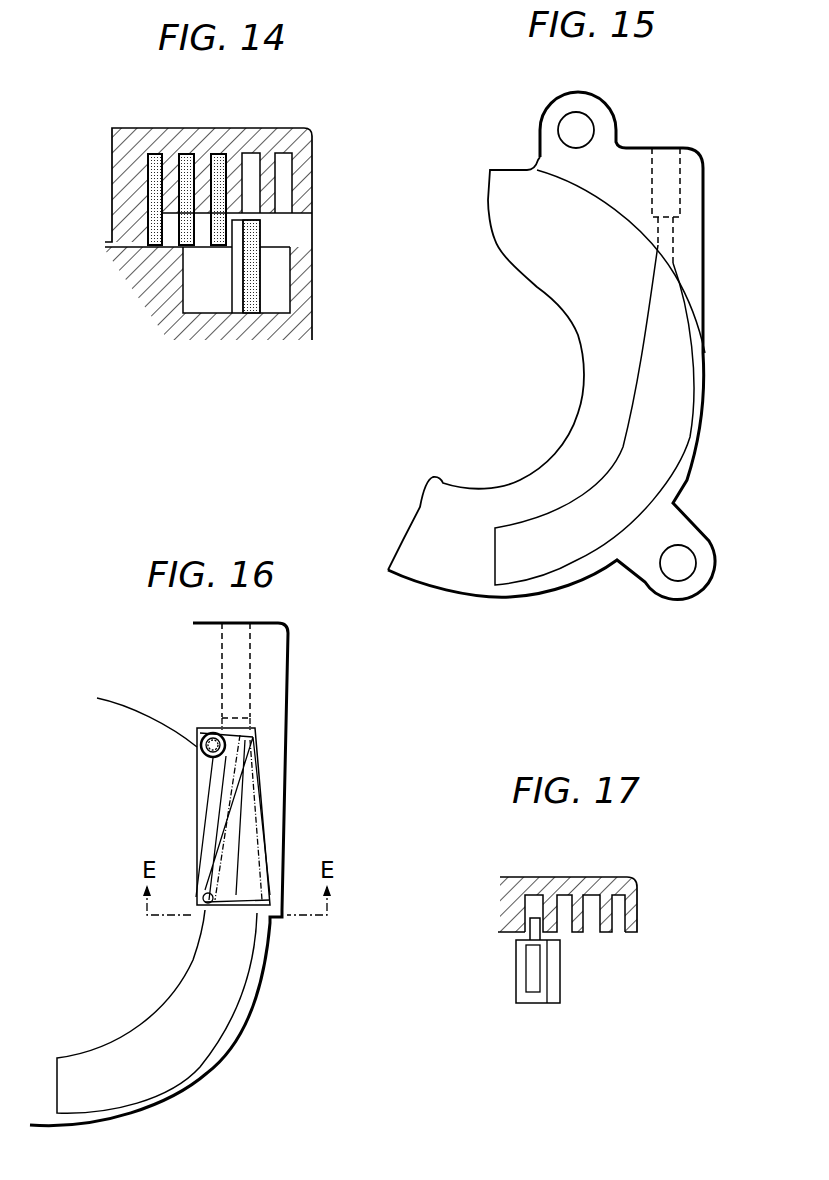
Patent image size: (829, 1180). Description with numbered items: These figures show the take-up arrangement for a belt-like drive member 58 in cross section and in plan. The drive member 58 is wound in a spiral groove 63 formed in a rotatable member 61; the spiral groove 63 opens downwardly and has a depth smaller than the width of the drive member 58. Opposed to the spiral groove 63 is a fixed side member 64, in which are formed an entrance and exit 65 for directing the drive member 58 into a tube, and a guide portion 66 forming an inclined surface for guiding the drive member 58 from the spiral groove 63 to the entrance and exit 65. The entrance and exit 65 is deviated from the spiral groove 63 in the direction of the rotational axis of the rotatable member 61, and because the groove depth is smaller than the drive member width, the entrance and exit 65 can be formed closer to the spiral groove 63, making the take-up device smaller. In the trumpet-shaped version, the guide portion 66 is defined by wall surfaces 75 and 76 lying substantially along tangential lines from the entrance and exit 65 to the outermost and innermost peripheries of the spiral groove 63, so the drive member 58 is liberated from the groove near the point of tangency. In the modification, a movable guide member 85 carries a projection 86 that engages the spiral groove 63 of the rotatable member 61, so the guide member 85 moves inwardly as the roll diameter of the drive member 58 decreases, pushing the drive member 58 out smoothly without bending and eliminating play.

In FIG. 14, the belt-like drive member 58 is at (187, 160).
In FIG. 14, the rotatable member 61 is at (127, 130).
In FIG. 17, the rotatable member 61 is at (592, 885).
In FIG. 14, the spiral groove 63 is at (283, 160).
In FIG. 17, the spiral groove 63 is at (617, 910).
In FIG. 14, the fixed side member 64 is at (175, 313).
In FIG. 15, the fixed side member 64 is at (442, 578).
In FIG. 16, the fixed side member 64 is at (270, 845).
In FIG. 14, the entrance and exit 65 is at (237, 307).
In FIG. 15, the entrance and exit 65 is at (680, 232).
In FIG. 16, the entrance and exit 65 is at (218, 718).
In FIG. 14, the guide portion 66 is at (274, 313).
In FIG. 15, the guide portion 66 is at (640, 417).
In FIG. 16, the guide portion 66 is at (223, 992).
In FIG. 15, the wall surface 75 is at (695, 410).
In FIG. 15, the wall surface 76 is at (642, 348).
In FIG. 16, the movable guide member 85 is at (238, 797).
In FIG. 17, the movable guide member 85 is at (553, 978).
In FIG. 16, the projection 86 is at (207, 908).
In FIG. 17, the projection 86 is at (532, 932).